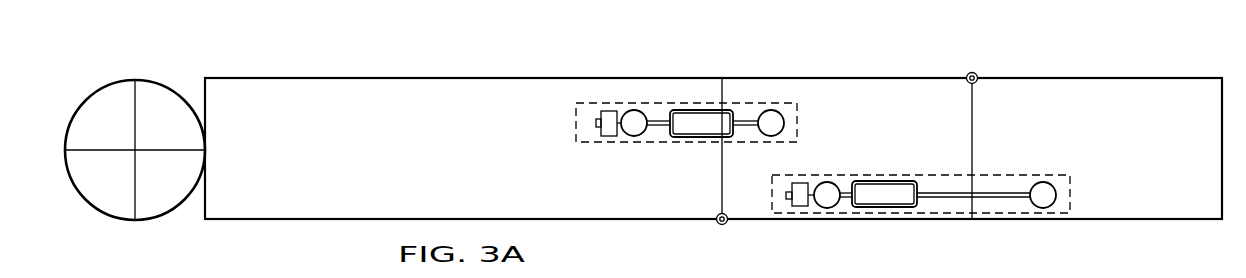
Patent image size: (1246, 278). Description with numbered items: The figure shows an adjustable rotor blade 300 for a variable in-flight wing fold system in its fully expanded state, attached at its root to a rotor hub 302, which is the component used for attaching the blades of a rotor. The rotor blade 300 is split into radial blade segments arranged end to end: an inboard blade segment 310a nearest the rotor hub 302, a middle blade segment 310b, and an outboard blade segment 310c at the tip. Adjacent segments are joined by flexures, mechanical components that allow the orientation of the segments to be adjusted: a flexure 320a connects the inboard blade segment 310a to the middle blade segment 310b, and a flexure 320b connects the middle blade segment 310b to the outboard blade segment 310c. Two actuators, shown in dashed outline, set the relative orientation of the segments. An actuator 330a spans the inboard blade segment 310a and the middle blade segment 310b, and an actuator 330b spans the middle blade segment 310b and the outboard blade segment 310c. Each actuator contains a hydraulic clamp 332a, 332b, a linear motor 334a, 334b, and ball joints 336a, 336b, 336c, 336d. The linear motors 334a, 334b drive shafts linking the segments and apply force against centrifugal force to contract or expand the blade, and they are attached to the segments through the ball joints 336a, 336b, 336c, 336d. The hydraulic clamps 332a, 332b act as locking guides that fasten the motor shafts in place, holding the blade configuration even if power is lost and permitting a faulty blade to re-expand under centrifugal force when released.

The adjustable rotor blade 300 is at (150, 60).
The rotor hub 302 is at (97, 212).
The inboard blade segment 310a is at (423, 76).
The middle blade segment 310b is at (862, 76).
The outboard blade segment 310c is at (1097, 76).
The flexure 320a is at (716, 226).
The flexure 320b is at (974, 72).
The actuator 330a is at (576, 105).
The actuator 330b is at (1015, 173).
The hydraulic clamp 332a is at (598, 130).
The hydraulic clamp 332b is at (789, 200).
The linear motor 334a is at (682, 110).
The linear motor 334b is at (896, 181).
The ball joint 336a is at (640, 137).
The ball joint 336b is at (784, 122).
The ball joint 336c is at (817, 208).
The ball joint 336d is at (1057, 194).